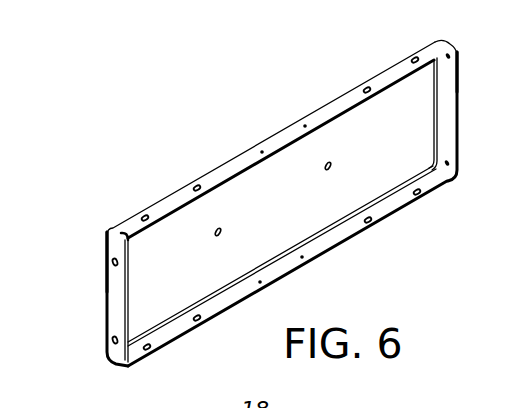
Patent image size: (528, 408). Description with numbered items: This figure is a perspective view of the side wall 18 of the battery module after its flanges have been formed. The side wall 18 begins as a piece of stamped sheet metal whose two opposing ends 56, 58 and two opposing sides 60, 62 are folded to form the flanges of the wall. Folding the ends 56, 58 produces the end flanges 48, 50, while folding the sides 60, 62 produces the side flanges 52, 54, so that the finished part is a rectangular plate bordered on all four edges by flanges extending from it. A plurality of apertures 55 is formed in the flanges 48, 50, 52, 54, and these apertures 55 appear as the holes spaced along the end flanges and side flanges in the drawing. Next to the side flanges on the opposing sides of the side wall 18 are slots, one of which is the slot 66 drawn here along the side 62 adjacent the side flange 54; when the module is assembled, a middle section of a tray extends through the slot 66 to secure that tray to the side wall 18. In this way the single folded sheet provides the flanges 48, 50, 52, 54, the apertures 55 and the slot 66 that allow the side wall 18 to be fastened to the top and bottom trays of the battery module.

The side wall 18 is at (151, 77).
The end flange 48 is at (449, 121).
The end flange 50 is at (117, 293).
The side flange 52 is at (382, 82).
The side flange 54 is at (347, 234).
The apertures 55 is at (417, 58).
The end 56 is at (457, 78).
The end 58 is at (108, 261).
The side 60 is at (282, 143).
The side 62 is at (248, 302).
The slot 66 is at (305, 248).